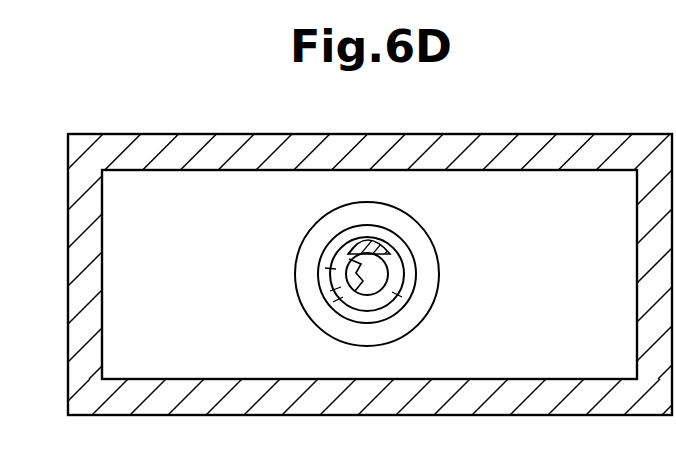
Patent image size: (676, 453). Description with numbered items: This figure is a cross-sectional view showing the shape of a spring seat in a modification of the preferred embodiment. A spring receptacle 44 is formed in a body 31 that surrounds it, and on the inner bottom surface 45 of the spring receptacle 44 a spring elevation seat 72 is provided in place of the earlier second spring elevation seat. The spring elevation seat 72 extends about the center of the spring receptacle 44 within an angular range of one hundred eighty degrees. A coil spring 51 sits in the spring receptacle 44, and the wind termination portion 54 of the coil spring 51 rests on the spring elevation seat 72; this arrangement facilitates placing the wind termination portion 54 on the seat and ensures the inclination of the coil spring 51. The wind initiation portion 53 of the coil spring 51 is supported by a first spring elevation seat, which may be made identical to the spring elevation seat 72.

The base frame 31 is at (604, 147).
The spring receptacle 44 is at (428, 276).
The inner bottom surface 45 is at (349, 311).
The coil spring 51 is at (394, 297).
The spring elevation seat 72 is at (334, 271).
The wind termination portion 54 is at (340, 285).
The wind initiation portion 53 is at (383, 243).